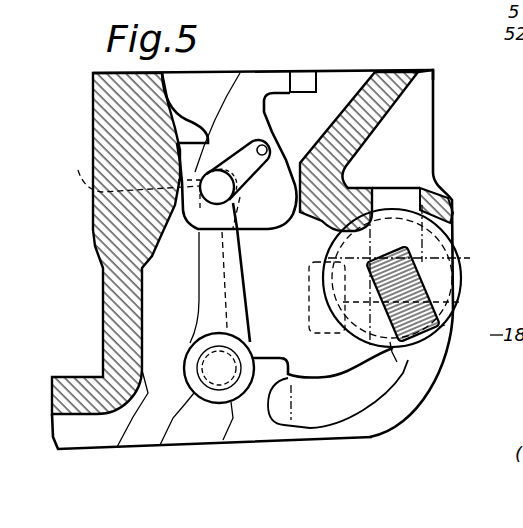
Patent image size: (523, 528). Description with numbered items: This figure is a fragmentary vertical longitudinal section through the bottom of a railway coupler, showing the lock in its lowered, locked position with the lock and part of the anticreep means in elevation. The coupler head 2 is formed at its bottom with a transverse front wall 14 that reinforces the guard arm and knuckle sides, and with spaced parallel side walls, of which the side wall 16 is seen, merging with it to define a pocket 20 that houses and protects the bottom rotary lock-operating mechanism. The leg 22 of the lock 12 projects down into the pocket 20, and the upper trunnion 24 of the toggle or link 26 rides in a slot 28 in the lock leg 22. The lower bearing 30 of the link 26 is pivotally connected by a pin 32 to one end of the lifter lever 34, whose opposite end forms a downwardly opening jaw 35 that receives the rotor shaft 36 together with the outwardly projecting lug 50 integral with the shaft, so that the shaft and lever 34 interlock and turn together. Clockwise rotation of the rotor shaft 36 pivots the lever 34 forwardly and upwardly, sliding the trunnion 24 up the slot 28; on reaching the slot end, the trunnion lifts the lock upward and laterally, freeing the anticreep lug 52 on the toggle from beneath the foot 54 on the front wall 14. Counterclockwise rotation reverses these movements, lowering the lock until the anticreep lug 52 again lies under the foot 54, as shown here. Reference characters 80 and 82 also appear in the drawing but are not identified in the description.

The coupler head 2 is at (433, 70).
The lock 12 is at (263, 72).
The front wall 14 is at (120, 289).
The side wall 16 is at (422, 127).
The pocket 20 is at (118, 448).
The lock leg 22 is at (272, 212).
The upper trunnion 24 is at (236, 220).
The link 26 is at (308, 317).
The slot 28 is at (267, 152).
The lower bearing 30 is at (163, 446).
The pin 32 is at (220, 370).
The lifter lever 34 is at (320, 438).
The jaw 35 is at (392, 348).
The rotor shaft 36 is at (405, 285).
The lug 50 is at (428, 345).
The anticreep lug 52 is at (123, 179).
The foot 54 is at (190, 128).
The bore 80 is at (452, 256).
The slot 82 is at (262, 438).